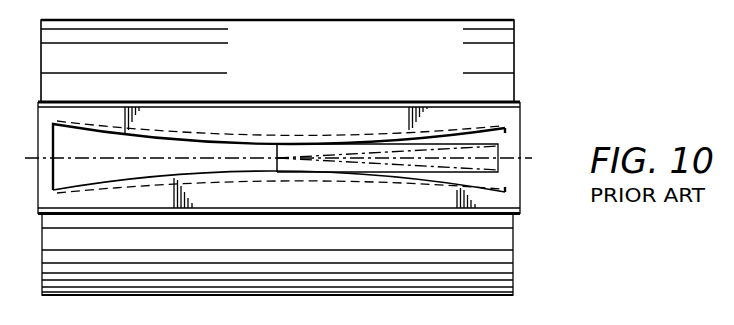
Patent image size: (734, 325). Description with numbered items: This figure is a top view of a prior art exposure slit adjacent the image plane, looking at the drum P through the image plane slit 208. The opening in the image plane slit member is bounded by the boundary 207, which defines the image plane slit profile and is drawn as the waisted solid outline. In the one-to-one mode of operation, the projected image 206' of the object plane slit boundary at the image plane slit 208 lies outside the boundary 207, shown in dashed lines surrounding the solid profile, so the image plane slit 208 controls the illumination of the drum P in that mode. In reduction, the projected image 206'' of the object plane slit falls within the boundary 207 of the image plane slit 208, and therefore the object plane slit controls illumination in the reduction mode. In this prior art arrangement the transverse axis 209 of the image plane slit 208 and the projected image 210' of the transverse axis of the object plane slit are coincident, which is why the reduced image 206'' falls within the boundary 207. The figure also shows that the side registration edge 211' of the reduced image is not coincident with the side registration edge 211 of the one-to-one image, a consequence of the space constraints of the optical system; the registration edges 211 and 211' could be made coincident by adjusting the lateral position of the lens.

The drum P is at (502, 61).
The boundary of the image plane slit 207 is at (117, 132).
The projected image of the object plane slit boundary 206' is at (278, 126).
The projected image of the object plane slit in reduction 206'' is at (278, 153).
The image plane slit 208 is at (512, 197).
The transverse axis of the image plane slit 209 is at (520, 158).
The projected image of the transverse axis of the object plane slit 210' is at (292, 165).
The side registration edge of the 1:1 image 211 is at (530, 127).
The side registration edge of the reduced image 211' is at (533, 191).